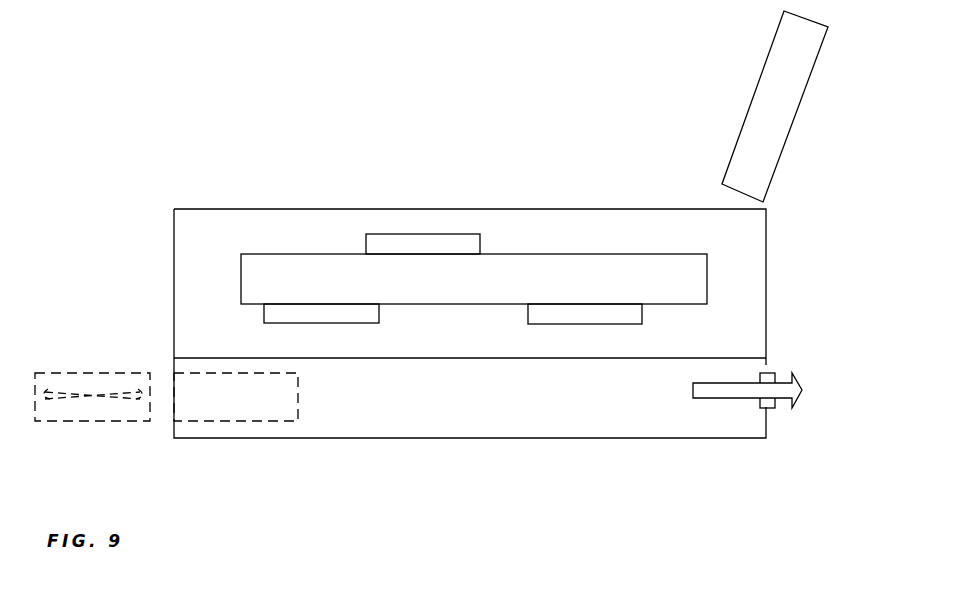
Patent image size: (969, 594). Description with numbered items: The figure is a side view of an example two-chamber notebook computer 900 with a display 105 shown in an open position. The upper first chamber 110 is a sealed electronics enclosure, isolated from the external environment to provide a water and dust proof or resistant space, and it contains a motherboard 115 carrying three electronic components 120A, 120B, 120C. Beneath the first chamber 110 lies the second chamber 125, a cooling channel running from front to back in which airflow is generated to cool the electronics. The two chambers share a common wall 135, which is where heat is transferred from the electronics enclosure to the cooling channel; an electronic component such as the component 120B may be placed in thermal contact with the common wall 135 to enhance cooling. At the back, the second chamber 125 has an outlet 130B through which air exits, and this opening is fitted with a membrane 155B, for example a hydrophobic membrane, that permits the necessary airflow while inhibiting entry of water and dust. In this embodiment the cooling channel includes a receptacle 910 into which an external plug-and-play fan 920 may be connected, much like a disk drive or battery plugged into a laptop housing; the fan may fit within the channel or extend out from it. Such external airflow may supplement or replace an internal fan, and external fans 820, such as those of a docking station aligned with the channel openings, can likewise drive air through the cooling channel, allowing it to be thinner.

The two-chamber notebook computer 900 is at (236, 182).
The first chamber 110 is at (470, 209).
The common wall 135 is at (458, 358).
The second chamber 125 is at (520, 423).
The motherboard 115 is at (241, 290).
The electronic component 120A is at (366, 244).
The electronic component 120B is at (379, 314).
The electronic component 120C is at (642, 315).
The outlet 130B is at (768, 408).
The membrane 155B is at (763, 376).
The display 105 is at (750, 97).
The receptacle 910 is at (230, 421).
The plug-and-play fan 920 is at (94, 373).
The fans 820 is at (835, 270).